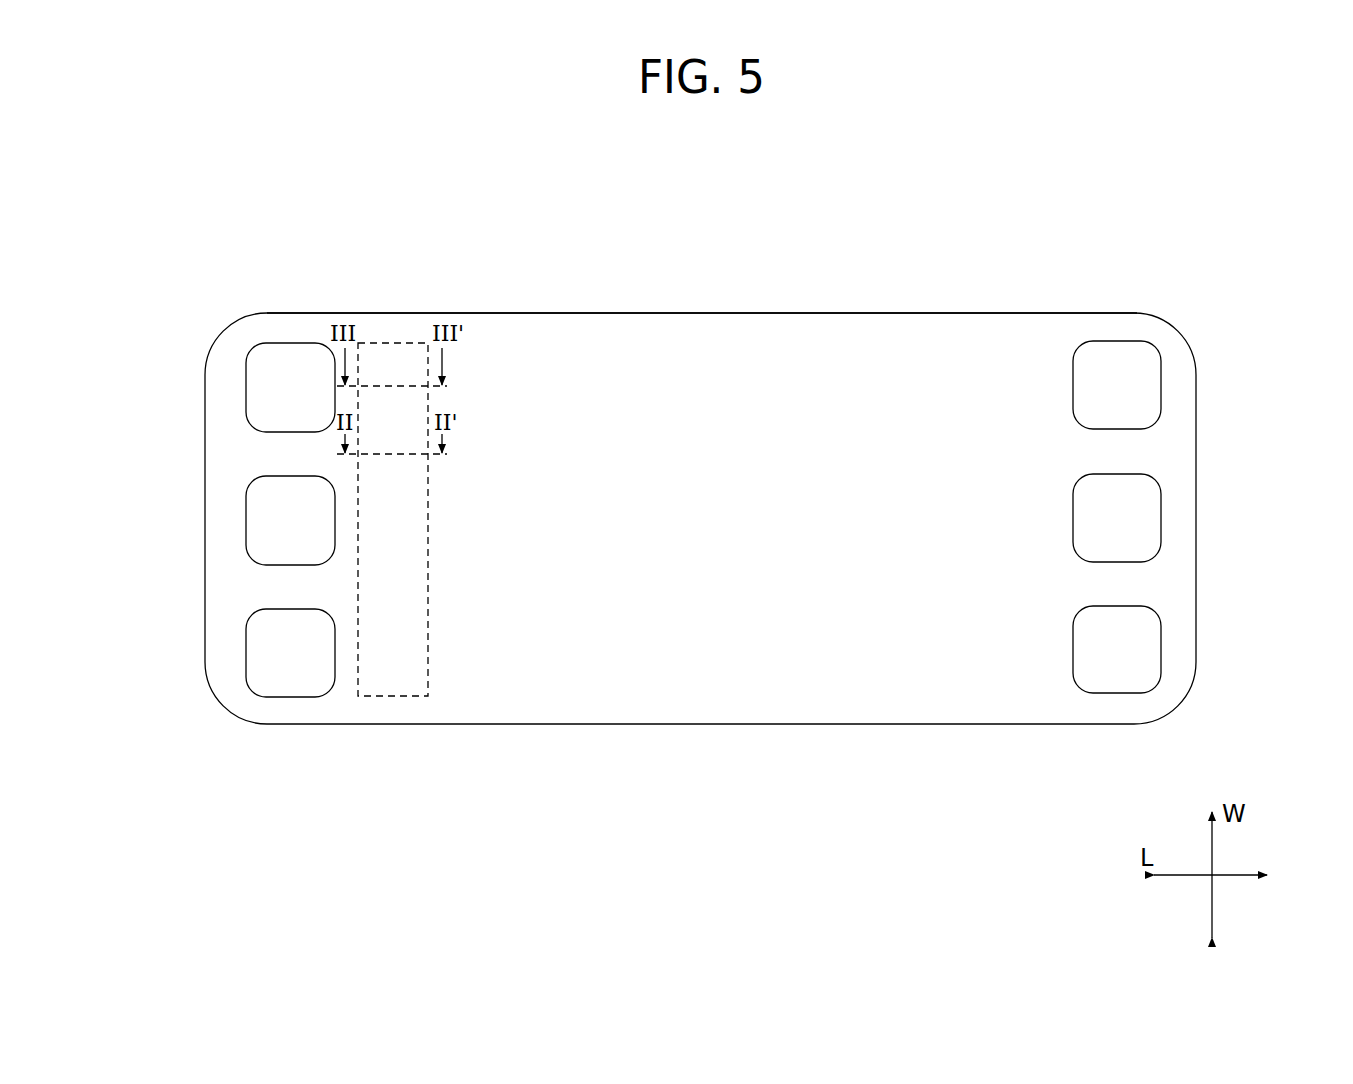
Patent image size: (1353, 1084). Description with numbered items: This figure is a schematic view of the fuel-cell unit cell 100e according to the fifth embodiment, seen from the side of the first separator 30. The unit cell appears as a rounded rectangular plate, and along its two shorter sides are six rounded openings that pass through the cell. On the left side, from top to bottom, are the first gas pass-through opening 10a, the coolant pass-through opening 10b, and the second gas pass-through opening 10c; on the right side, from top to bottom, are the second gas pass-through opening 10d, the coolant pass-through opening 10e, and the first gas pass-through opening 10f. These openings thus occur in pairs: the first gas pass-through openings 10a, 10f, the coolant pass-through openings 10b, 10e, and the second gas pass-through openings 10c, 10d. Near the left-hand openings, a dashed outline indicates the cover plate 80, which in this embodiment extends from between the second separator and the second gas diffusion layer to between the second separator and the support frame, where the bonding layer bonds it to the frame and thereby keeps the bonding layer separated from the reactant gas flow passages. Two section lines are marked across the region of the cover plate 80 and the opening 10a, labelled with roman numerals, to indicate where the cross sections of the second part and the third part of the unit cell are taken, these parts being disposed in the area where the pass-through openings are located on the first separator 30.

The fuel-cell unit cell 100e is at (658, 290).
The first separator 30 is at (537, 340).
The cover plate 80 is at (393, 350).
The first gas pass-through opening 10a is at (287, 387).
The coolant pass-through opening 10b is at (287, 522).
The second gas pass-through opening 10c is at (287, 658).
The second gas pass-through opening 10d is at (1142, 388).
The coolant pass-through opening 10e is at (1142, 518).
The first gas pass-through opening 10f is at (1142, 654).